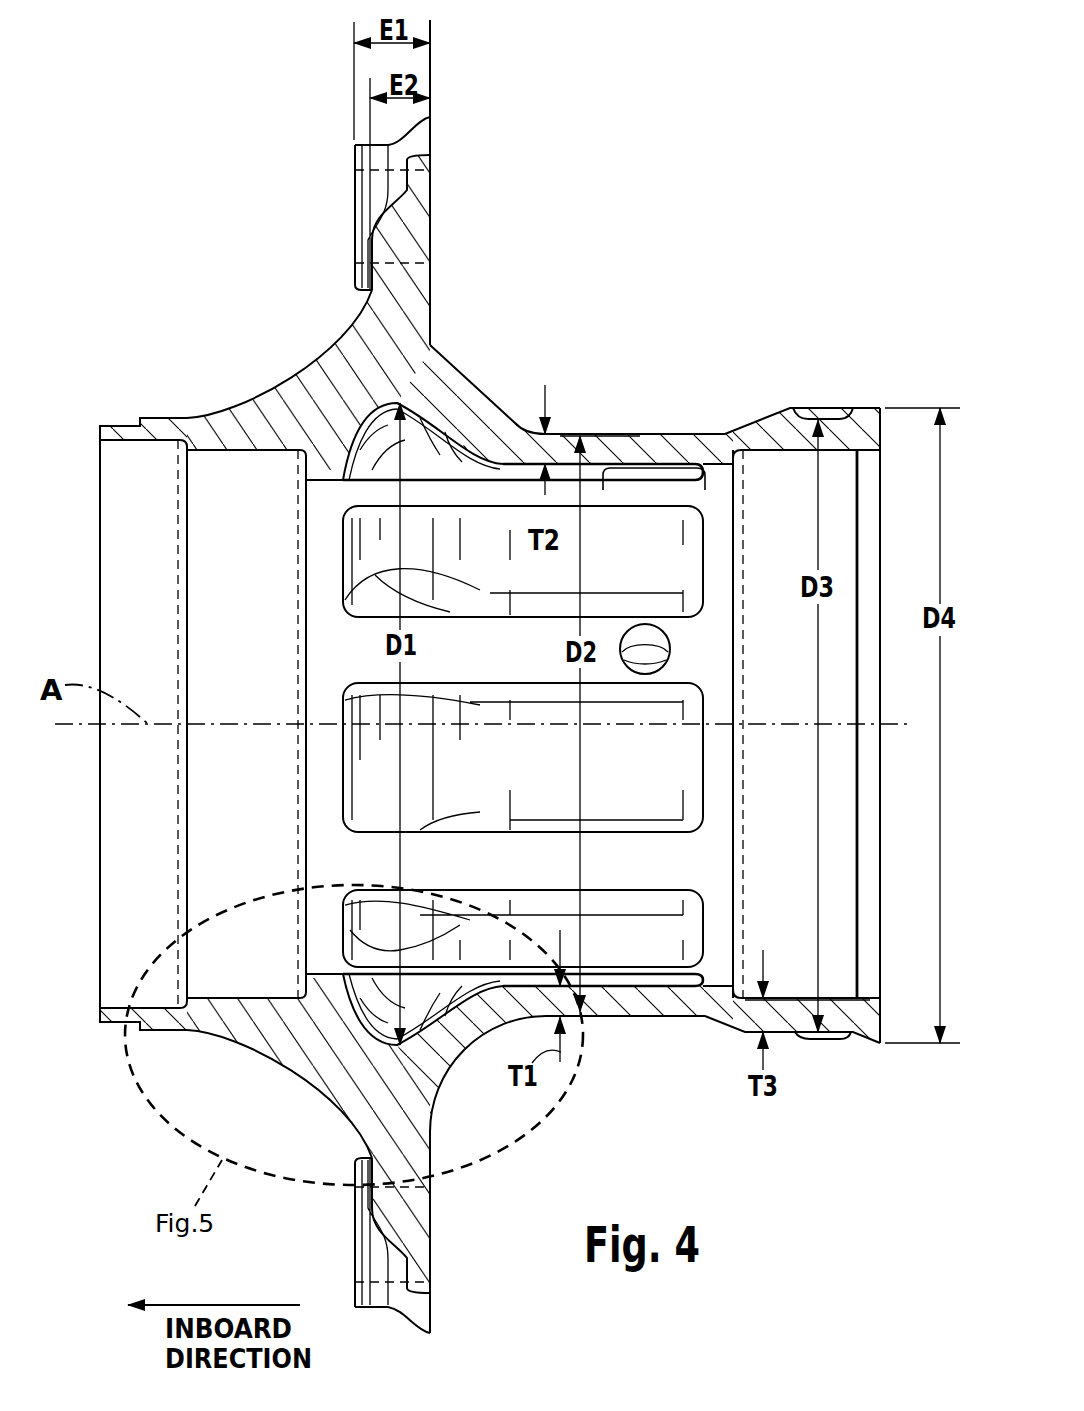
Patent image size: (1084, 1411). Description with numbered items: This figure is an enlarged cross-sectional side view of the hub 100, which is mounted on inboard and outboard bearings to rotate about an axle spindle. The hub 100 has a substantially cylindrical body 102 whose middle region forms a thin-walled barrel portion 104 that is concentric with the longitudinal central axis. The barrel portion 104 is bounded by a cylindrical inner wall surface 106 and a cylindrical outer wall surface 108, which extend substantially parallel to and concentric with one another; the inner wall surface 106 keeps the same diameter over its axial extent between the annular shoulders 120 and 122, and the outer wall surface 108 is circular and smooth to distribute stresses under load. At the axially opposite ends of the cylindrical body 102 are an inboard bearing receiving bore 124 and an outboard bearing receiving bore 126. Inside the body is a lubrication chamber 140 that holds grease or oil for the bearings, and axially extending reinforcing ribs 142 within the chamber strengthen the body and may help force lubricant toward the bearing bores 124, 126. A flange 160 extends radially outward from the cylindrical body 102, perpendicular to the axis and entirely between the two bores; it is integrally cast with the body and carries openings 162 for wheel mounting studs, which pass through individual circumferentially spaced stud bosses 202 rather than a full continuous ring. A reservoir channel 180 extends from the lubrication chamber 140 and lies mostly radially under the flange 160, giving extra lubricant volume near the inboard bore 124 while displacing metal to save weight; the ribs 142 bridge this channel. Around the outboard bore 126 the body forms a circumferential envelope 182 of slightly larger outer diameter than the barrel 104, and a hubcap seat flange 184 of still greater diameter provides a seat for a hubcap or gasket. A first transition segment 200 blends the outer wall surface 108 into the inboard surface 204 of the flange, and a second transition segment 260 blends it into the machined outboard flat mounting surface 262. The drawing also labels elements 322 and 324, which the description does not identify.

The hub 100 is at (660, 256).
The cylindrical body 102 is at (721, 1032).
The barrel portion 104 is at (685, 437).
The cylindrical inner wall surface 106 is at (657, 437).
The cylindrical outer wall surface 108 is at (610, 433).
The annular shoulder 120 is at (307, 473).
The annular shoulder 122 is at (737, 468).
The inboard bearing receiving bore 124 is at (217, 455).
The outboard bearing receiving bore 126 is at (840, 1000).
The lubrication chamber 140 is at (651, 956).
The reinforcing ribs 142 is at (486, 668).
The flange 160 is at (400, 1138).
The openings 162 is at (416, 1273).
The reservoir channel 180 is at (367, 1012).
The circumferential envelope 182 is at (775, 440).
The hubcap seat flange 184 is at (880, 545).
The first transition segment 200 is at (321, 351).
The stud bosses 202 is at (367, 188).
The inboard surface 204 is at (367, 252).
The second transition segment 260 is at (468, 374).
The outboard flat mounting surface 262 is at (430, 222).
The groove 322 is at (818, 418).
The hole 324 is at (645, 626).